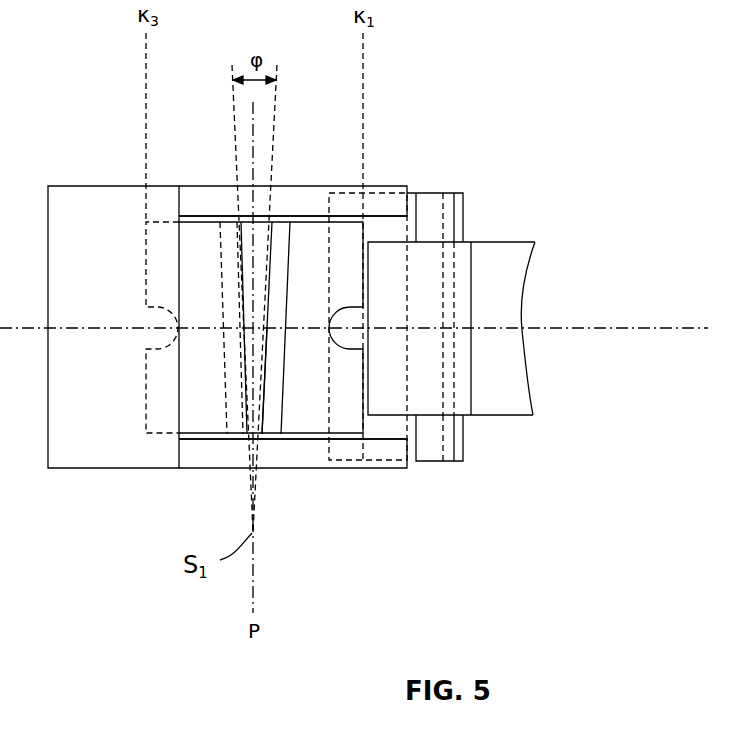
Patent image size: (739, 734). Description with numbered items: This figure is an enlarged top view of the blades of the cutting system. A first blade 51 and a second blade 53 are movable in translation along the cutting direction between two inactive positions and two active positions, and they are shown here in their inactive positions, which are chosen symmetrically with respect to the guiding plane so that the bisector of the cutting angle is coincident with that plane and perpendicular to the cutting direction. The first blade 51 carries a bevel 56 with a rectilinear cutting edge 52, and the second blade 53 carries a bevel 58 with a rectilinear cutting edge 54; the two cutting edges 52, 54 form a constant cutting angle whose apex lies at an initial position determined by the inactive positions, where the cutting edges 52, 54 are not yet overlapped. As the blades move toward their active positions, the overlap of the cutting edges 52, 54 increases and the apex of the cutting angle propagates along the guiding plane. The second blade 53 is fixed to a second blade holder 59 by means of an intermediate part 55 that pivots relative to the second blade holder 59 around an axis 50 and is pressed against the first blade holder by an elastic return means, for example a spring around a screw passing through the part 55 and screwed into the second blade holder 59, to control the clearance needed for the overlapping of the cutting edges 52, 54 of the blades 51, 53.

The axis 50 is at (450, 450).
The first blade 51 is at (207, 417).
The cutting edge of the first blade 52 is at (239, 230).
The second blade 53 is at (310, 238).
The cutting edge of the second blade 54 is at (260, 410).
The part 55 is at (413, 199).
The bevel of the first blade 56 is at (238, 420).
The bevel of the second blade 58 is at (277, 233).
The second blade holder 59 is at (508, 267).